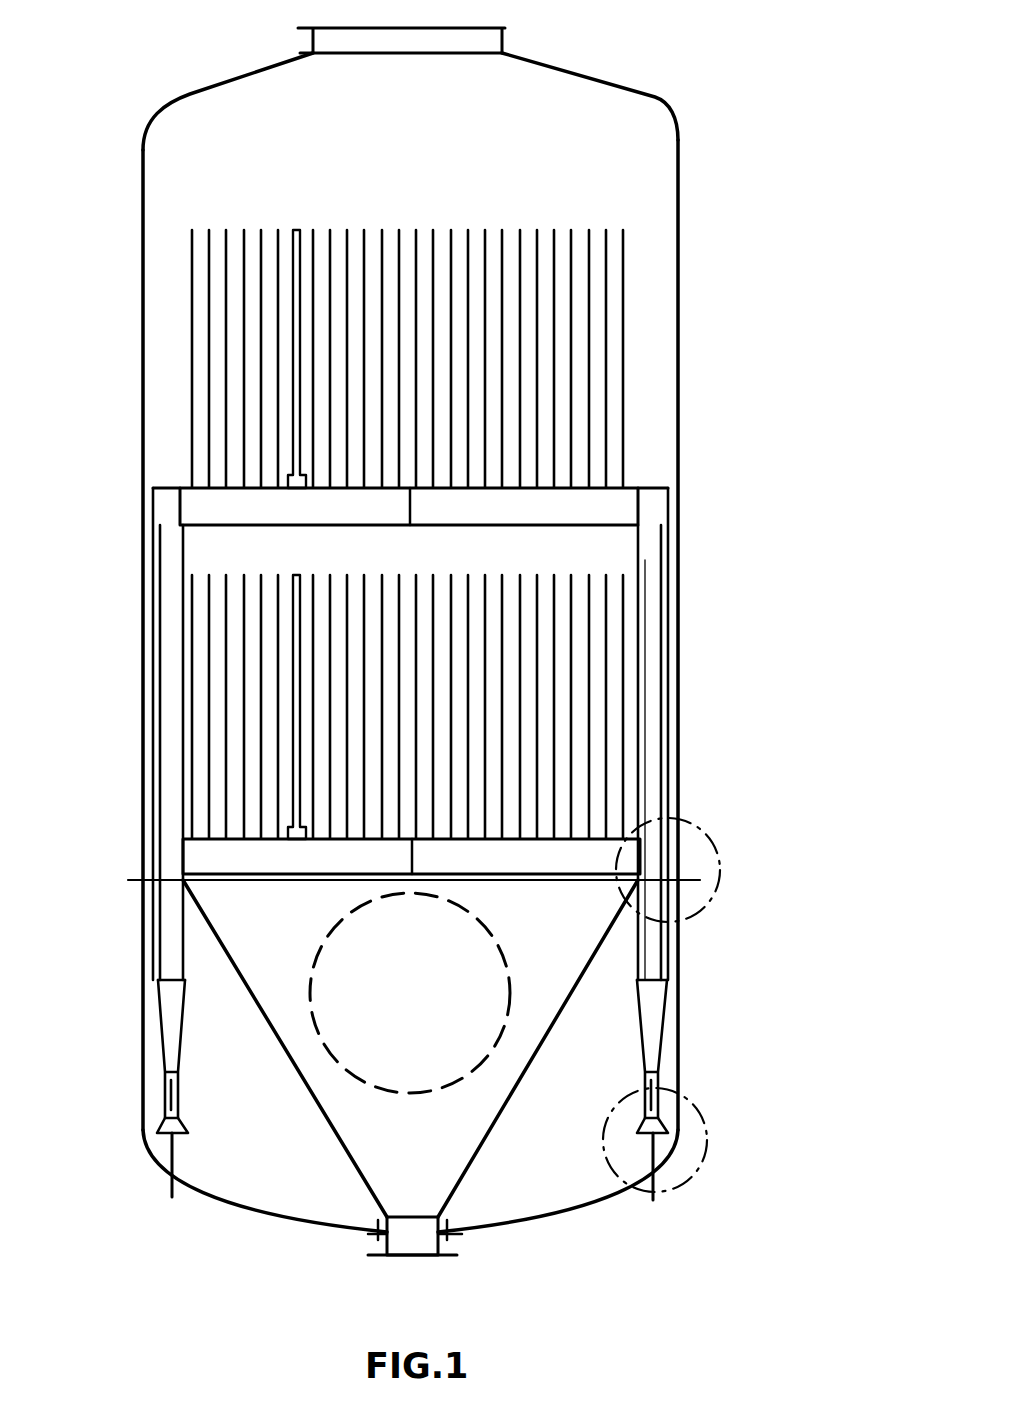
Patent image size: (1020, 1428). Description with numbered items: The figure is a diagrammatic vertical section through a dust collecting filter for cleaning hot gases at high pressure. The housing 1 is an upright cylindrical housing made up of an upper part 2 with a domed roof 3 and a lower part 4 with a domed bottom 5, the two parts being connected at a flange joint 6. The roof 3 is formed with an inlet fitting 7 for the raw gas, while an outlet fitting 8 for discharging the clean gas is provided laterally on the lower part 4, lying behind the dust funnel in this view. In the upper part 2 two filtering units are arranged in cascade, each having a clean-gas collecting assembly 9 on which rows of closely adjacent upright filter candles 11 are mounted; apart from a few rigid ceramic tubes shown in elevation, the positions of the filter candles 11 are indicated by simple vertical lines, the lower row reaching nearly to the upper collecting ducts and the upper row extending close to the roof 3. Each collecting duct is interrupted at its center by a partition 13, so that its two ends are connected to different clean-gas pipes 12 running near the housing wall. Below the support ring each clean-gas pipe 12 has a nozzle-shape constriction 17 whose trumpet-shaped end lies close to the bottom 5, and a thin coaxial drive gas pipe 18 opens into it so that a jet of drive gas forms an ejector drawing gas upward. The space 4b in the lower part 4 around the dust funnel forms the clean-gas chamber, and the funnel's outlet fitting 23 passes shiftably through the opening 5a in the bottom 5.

The housing 1 is at (490, 574).
The upper part 2 is at (680, 374).
The domed roof 3 is at (608, 82).
The lower part 4 is at (683, 1062).
The clean-gas chamber 4b is at (268, 1111).
The domed bottom 5 is at (228, 1200).
The opening 5a is at (378, 1234).
The flange joint 6 is at (738, 880).
The inlet fitting 7 is at (507, 35).
The outlet fitting 8 is at (340, 1003).
The clean-gas collecting assembly 9 is at (615, 500).
The filter candles 11 is at (297, 277).
The clean-gas pipe 12 is at (655, 532).
The partition 13 is at (412, 503).
The nozzle-shape constriction 17 is at (655, 1022).
The drive gas pipe 18 is at (172, 1175).
The outlet fitting 23 is at (375, 1258).